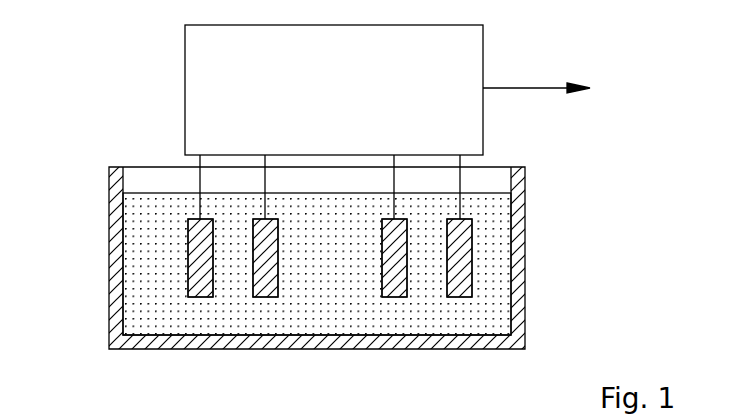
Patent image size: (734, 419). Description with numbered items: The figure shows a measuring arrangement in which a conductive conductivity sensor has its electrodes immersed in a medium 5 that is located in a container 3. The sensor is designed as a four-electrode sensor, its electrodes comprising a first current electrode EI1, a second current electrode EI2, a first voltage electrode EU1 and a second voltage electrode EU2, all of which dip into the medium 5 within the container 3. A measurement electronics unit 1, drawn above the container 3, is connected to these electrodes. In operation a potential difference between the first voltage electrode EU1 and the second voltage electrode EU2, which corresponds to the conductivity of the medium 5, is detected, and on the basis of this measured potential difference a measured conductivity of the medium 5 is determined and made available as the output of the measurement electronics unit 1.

The measurement electronics unit 1 is at (335, 96).
The container 3 is at (527, 210).
The medium 5 is at (163, 312).
The first current electrode EI1 is at (197, 270).
The first voltage electrode EU1 is at (268, 270).
The second voltage electrode EU2 is at (394, 257).
The second current electrode EI2 is at (467, 267).